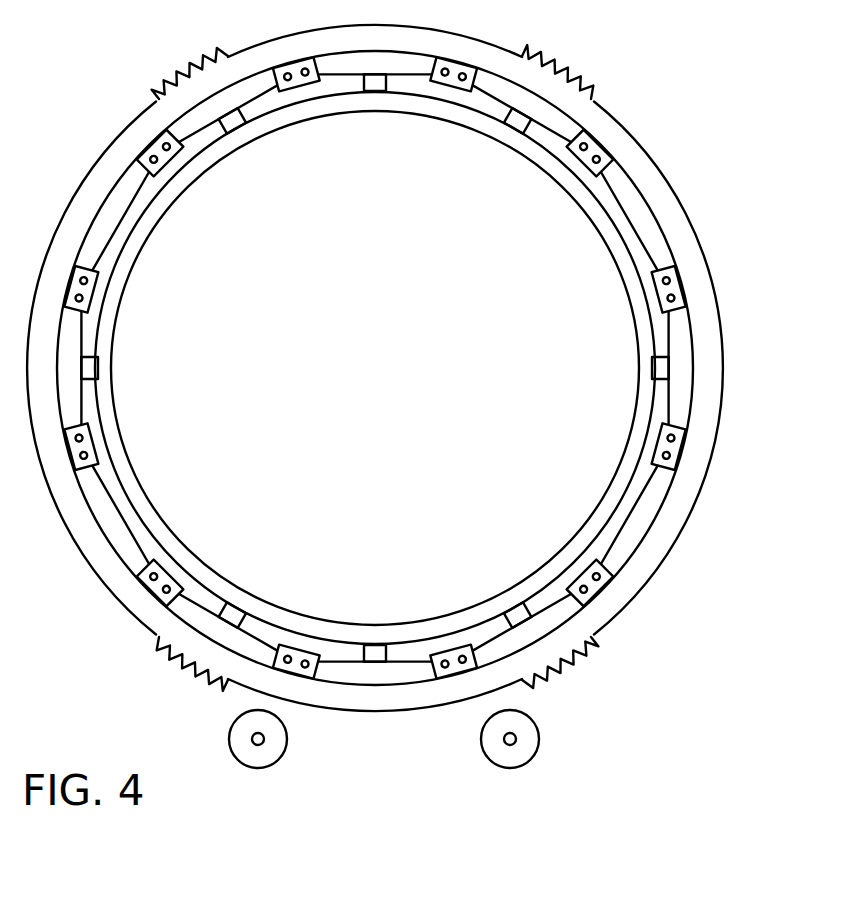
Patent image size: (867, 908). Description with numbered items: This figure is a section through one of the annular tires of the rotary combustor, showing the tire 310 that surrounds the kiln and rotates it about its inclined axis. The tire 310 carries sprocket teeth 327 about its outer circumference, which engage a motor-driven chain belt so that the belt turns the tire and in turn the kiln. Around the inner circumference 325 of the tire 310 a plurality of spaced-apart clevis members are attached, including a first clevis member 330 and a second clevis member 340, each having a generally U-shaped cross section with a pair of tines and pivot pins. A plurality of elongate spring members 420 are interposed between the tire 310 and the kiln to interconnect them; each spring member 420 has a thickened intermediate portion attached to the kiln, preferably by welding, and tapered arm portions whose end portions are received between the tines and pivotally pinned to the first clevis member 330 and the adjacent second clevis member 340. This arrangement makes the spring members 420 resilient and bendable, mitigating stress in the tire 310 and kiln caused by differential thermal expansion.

The annular tire 310 is at (688, 515).
The inner circumference 325 is at (618, 551).
The sprocket teeth 327 is at (568, 663).
The first clevis member 330 is at (295, 675).
The second clevis member 340 is at (442, 675).
The elongate spring member 420 is at (418, 668).